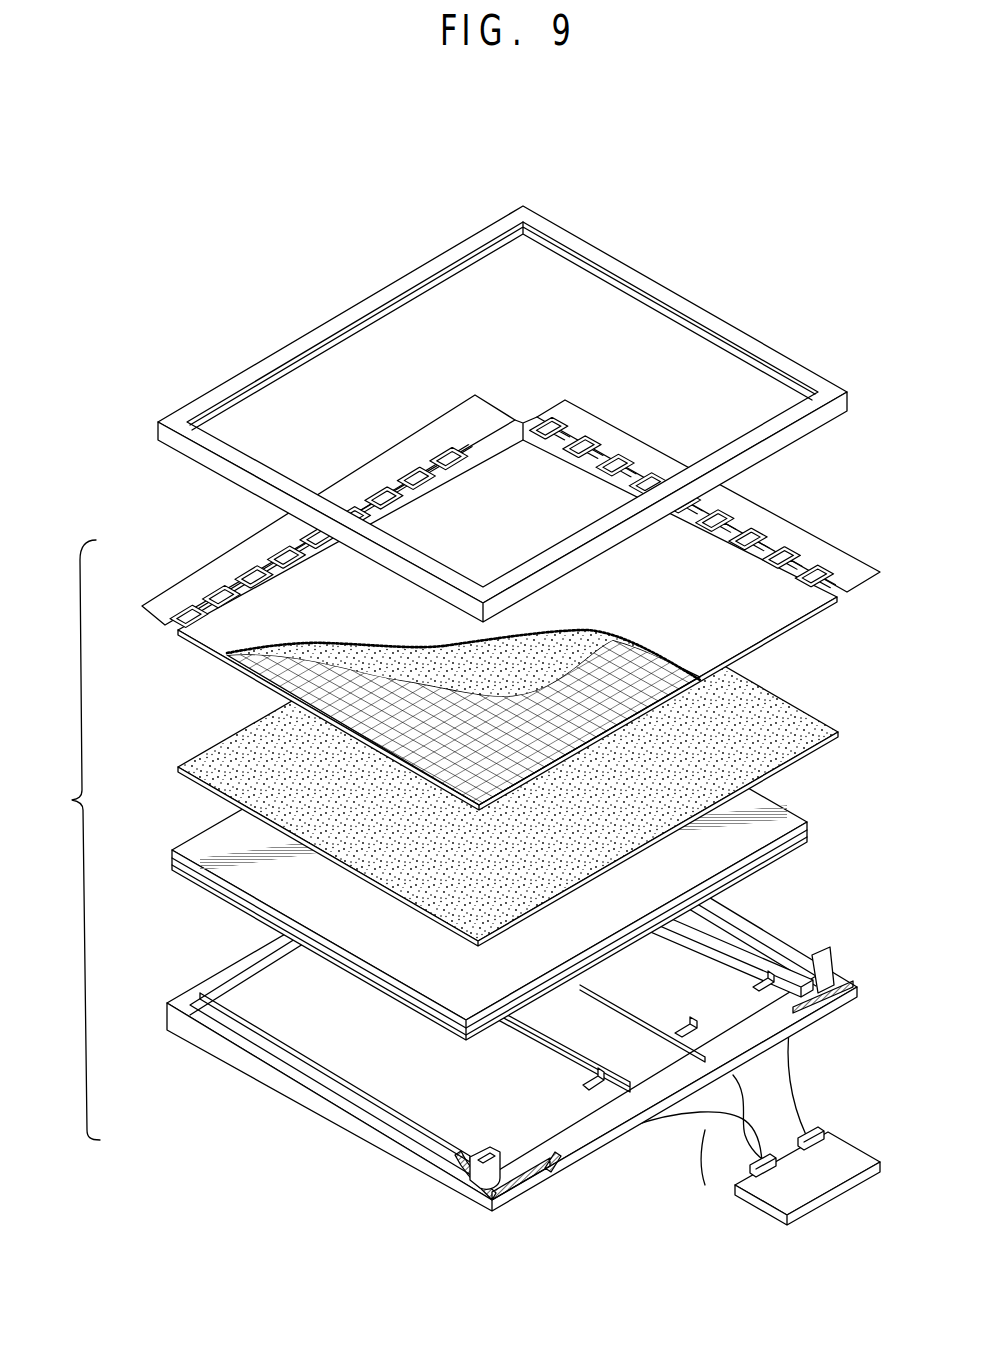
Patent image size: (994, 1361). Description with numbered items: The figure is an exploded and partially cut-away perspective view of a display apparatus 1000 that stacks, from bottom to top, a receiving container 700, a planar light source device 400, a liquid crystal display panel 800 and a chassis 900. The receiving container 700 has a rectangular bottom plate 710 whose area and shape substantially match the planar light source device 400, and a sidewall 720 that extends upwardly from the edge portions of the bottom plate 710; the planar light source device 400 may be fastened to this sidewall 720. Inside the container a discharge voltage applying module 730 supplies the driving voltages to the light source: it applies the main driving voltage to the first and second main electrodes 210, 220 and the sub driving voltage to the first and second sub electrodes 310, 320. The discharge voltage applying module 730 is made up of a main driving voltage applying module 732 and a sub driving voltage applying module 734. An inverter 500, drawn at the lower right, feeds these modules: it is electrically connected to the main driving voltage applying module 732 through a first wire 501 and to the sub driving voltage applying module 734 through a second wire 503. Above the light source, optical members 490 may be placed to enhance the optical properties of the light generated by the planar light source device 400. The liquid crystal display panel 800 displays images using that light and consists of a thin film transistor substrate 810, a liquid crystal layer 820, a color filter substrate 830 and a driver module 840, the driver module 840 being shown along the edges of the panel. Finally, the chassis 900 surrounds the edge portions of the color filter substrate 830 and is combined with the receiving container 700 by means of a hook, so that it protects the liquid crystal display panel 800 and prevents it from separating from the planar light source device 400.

The display apparatus 1000 is at (705, 284).
The chassis 900 is at (197, 481).
The driver module 840 is at (486, 390).
The color filter substrate 830 is at (511, 479).
The liquid crystal layer 820 is at (580, 656).
The thin film transistor (TFT) substrate 810 is at (263, 681).
The liquid crystal display panel 800 is at (495, 551).
The optical members 490 is at (835, 714).
The planar light source device 400 is at (500, 810).
The second main electrode 220 is at (537, 857).
The first main electrode 210 is at (470, 1032).
The first sub electrode 310 is at (612, 960).
The second sub electrode 320 is at (772, 976).
The receiving container 700 is at (442, 906).
The bottom plate 710 is at (527, 1158).
The sidewall 720 is at (430, 1168).
The discharge voltage applying module 730 is at (440, 1099).
The main driving voltage applying module 732 is at (325, 1068).
The sub driving voltage applying module 734 is at (590, 1072).
The inverter 500 is at (726, 1162).
The first wire 501 is at (648, 1150).
The second wire 503 is at (745, 1178).